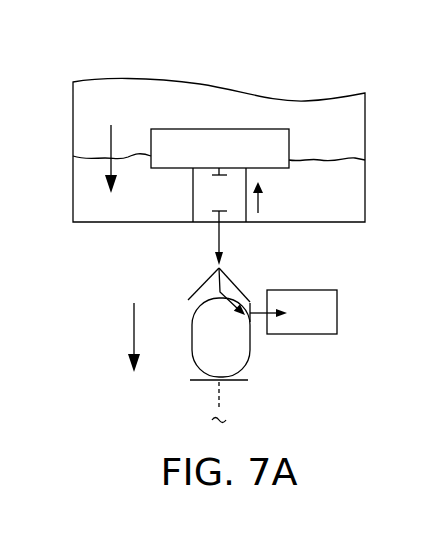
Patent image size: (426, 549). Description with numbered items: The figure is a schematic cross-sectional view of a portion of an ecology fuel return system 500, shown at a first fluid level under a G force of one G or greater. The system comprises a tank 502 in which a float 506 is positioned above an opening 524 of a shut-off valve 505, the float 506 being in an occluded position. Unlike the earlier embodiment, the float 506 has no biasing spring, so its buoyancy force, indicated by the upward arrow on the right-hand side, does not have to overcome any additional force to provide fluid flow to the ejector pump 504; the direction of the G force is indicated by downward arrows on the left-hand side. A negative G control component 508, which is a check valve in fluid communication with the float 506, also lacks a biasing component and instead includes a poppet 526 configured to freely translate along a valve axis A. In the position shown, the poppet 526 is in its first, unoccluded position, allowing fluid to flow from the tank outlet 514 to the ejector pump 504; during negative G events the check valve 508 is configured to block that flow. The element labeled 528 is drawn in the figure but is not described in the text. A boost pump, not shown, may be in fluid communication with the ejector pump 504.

The ecology fuel return system 500 is at (254, 94).
The tank 502 is at (366, 108).
The ejector pump 504 is at (330, 320).
The shut-off valve 505 is at (262, 174).
The float 506 is at (238, 158).
The negative G control component 508 is at (251, 279).
The tank outlet 514 is at (247, 222).
The opening 524 is at (190, 166).
The poppet 526 is at (236, 346).
The switch element 528 is at (207, 284).
The valve axis A is at (222, 397).